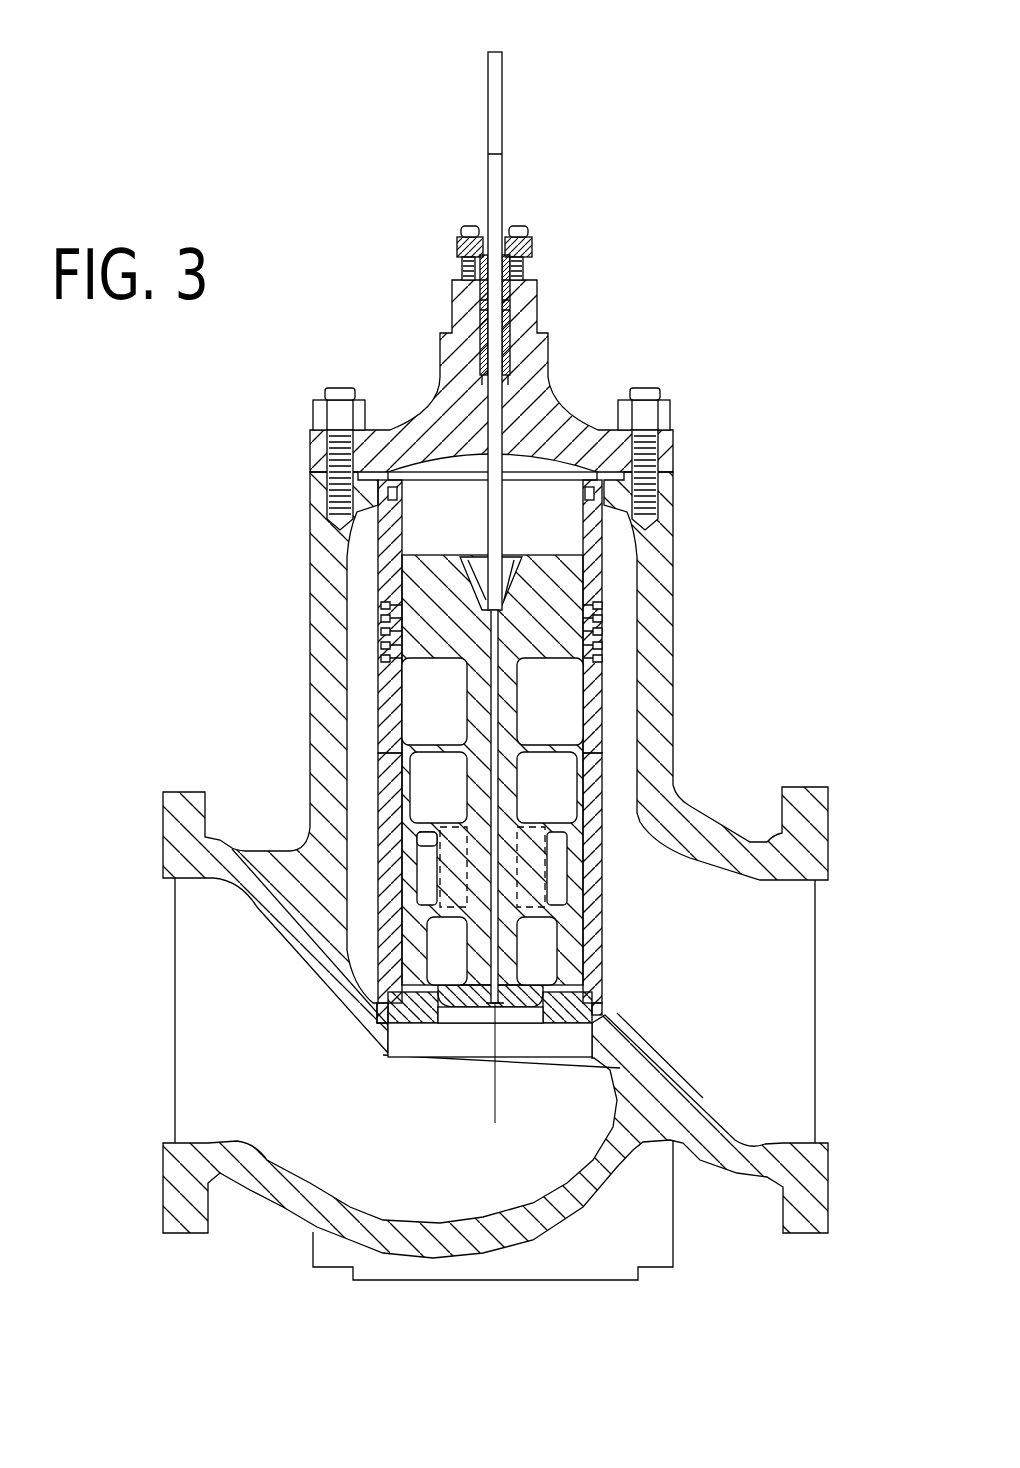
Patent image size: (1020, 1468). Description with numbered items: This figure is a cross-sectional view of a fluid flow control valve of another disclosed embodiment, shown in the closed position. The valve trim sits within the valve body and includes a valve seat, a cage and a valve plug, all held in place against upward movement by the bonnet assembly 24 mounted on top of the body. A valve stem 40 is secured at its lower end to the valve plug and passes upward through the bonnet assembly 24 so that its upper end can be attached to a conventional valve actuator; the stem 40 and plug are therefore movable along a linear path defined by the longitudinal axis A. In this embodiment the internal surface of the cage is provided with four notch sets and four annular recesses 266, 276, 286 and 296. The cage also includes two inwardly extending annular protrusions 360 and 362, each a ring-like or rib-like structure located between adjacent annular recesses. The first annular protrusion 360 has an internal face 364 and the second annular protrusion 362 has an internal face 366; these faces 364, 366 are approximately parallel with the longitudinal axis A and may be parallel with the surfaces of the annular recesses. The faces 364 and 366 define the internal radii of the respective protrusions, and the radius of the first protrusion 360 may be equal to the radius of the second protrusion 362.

The valve stem 40 is at (493, 385).
The bonnet assembly 24 is at (543, 395).
The annular recess 296 is at (588, 723).
The annular recess 286 is at (587, 792).
The annular recess 276 is at (572, 882).
The annular recess 266 is at (578, 951).
The annular protrusion 360 is at (445, 912).
The annular protrusion 362 is at (433, 832).
The internal face 364 is at (437, 890).
The internal face 366 is at (425, 845).
The longitudinal axis A is at (493, 1087).